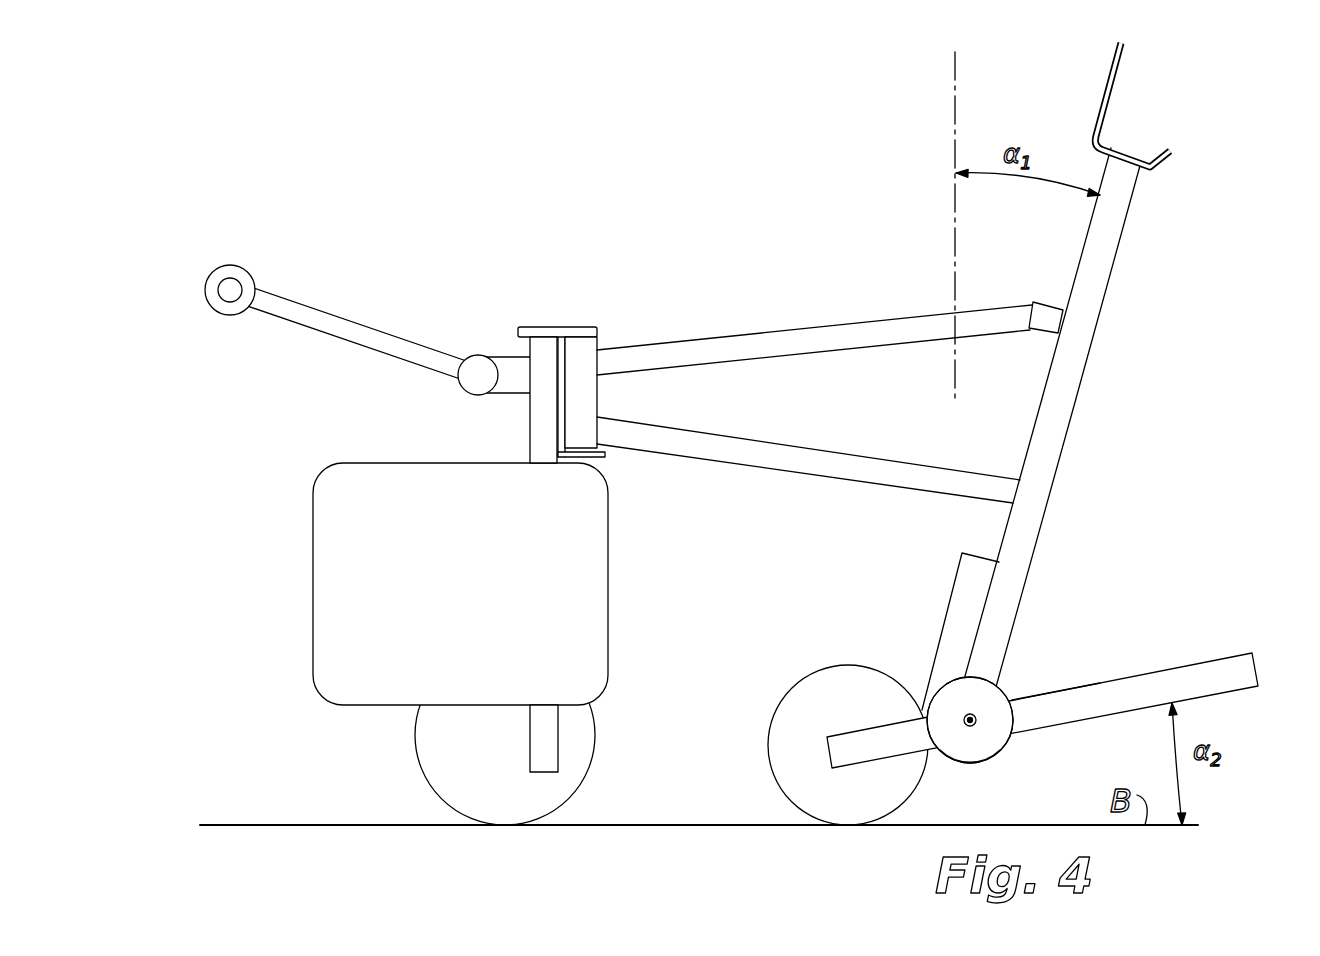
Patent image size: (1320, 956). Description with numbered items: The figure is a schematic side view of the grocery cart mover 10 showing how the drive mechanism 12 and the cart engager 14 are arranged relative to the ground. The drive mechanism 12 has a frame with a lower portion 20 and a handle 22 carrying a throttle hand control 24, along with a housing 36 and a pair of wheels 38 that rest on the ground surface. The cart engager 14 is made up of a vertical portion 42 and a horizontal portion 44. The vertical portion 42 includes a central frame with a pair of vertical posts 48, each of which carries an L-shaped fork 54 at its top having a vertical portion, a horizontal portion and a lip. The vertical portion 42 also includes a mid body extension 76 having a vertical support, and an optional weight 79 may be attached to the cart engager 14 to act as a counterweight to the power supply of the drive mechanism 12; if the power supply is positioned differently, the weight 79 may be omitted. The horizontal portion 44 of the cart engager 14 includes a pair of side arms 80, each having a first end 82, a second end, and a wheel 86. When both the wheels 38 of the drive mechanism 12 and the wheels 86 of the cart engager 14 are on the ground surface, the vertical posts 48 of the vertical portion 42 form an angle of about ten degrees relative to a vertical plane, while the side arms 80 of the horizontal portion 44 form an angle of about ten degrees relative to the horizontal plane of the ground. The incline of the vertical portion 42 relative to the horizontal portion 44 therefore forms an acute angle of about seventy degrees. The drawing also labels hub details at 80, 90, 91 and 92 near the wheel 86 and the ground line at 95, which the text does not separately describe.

The grocery cart mover 10 is at (720, 290).
The drive mechanism 12 is at (547, 320).
The cart engager 14 is at (1096, 374).
The lower portion 20 is at (548, 730).
The handle 22 is at (298, 300).
The throttle hand control 24 is at (215, 265).
The housing 36 is at (477, 601).
The wheels 38 is at (550, 794).
The vertical portion 42 is at (1090, 370).
The horizontal portion 44 is at (1058, 678).
The vertical posts 48 is at (1100, 258).
The L-shaped fork 54 is at (1113, 98).
The mid body extension 76 is at (878, 332).
The weight 79 is at (965, 577).
The side arms 80 is at (1022, 722).
The first end 82 is at (1218, 655).
The wheel 86 is at (900, 780).
The washer 90 is at (995, 763).
The axle bolt 91 is at (1010, 745).
The hub plate 92 is at (960, 690).
The ground surface 95 is at (742, 825).